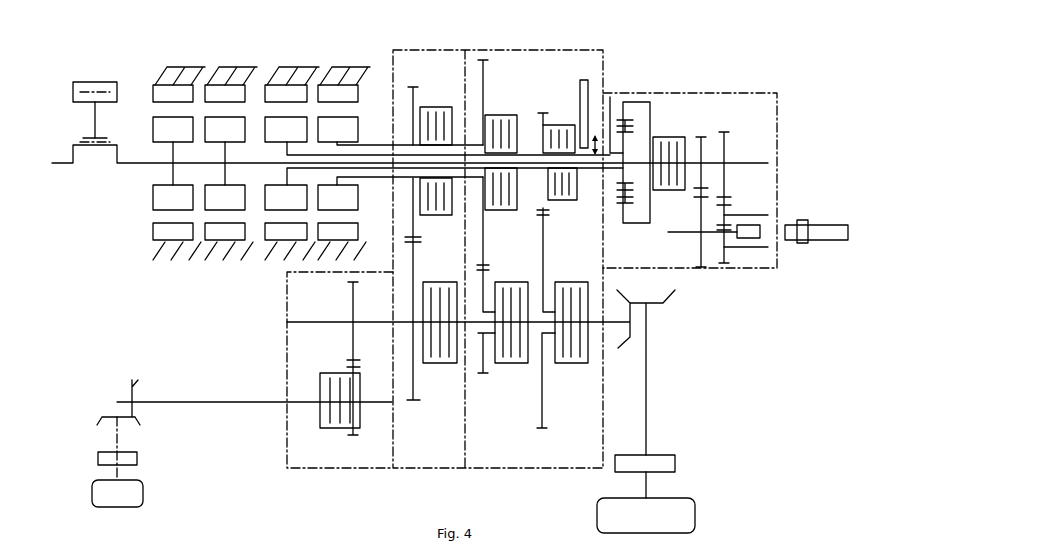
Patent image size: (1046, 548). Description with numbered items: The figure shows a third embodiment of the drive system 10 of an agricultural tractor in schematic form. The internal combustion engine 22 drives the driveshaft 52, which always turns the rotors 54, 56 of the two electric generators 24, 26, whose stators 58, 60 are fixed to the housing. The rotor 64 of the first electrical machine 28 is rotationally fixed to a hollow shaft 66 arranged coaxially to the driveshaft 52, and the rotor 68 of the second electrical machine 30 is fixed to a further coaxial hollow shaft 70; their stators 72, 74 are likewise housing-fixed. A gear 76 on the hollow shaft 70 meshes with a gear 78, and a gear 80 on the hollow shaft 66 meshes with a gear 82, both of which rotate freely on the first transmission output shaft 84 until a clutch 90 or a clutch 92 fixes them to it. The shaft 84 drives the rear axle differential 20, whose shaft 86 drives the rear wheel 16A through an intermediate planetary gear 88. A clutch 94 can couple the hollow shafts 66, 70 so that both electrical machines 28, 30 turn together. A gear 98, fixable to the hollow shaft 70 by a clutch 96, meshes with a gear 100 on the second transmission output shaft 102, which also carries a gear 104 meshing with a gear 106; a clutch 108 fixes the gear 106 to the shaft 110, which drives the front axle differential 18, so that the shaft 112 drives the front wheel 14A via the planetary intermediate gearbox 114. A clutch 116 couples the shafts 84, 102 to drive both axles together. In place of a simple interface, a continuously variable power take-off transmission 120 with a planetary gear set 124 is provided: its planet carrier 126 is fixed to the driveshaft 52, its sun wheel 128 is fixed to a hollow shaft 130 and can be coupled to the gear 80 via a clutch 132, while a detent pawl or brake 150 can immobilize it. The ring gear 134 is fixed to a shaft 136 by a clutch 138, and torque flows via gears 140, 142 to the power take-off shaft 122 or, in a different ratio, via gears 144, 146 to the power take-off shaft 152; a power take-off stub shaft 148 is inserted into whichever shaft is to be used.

The drive system 10 is at (596, 38).
The front axle differential 18 is at (102, 390).
The rear axle differential 20 is at (682, 293).
The internal combustion engine 22 is at (84, 74).
The first electric generator 24 is at (166, 272).
The second electric generator 26 is at (222, 272).
The first electrical machine 28 is at (279, 272).
The second electrical machine 30 is at (364, 62).
The driveshaft 52 is at (125, 163).
The rotor of first electric generator 54 is at (162, 198).
The rotor of second electric generator 56 is at (233, 200).
The stator of first electric generator 58 is at (168, 233).
The stator of second electric generator 60 is at (213, 235).
The rotor of first electrical machine 64 is at (437, 136).
The hollow shaft 66 is at (313, 200).
The rotor of second electrical machine 68 is at (400, 131).
The hollow shaft 70 is at (388, 144).
The stator of first electrical machine 72 is at (276, 97).
The stator of second electrical machine 74 is at (328, 97).
The gear 76 is at (485, 62).
The gear 78 is at (485, 278).
The gear 80 is at (545, 125).
The gear 82 is at (543, 278).
The first transmission output shaft 84 is at (593, 313).
The shaft of differential 86 is at (648, 392).
The intermediate planetary gear 88 is at (675, 465).
The clutch 90 is at (503, 363).
The clutch 92 is at (567, 363).
The clutch 94 is at (490, 115).
The clutch 96 is at (430, 107).
The gear 98 is at (415, 222).
The gear 100 is at (417, 277).
The second transmission output shaft 102 is at (368, 322).
The gear 104 is at (355, 340).
The gear 106 is at (355, 437).
The clutch 108 is at (330, 430).
The shaft 110 is at (222, 400).
The shaft 112 is at (118, 437).
The planetary intermediate gearbox 114 is at (137, 458).
The clutch 116 is at (442, 363).
The continuously variable power take-off transmission 120 is at (795, 77).
The power take-off shaft 122 is at (747, 242).
The planetary gear set 124 is at (650, 70).
The planet carrier 126 is at (633, 183).
The sun wheel 128 is at (617, 175).
The hollow shaft 130 is at (610, 97).
The clutch 132 is at (558, 123).
The ring gear 134 is at (623, 223).
The shaft 136 is at (755, 162).
The clutch 138 is at (670, 137).
The gear 140 is at (702, 137).
The gear 142 is at (700, 242).
The gear 144 is at (725, 132).
The gear 146 is at (725, 208).
The power take-off stub shaft 148 is at (827, 230).
The detent pawl or brake 150 is at (583, 80).
The power take-off shaft 152 is at (735, 252).
The front wheel 14A is at (117, 493).
The rear wheel 16A is at (646, 515).